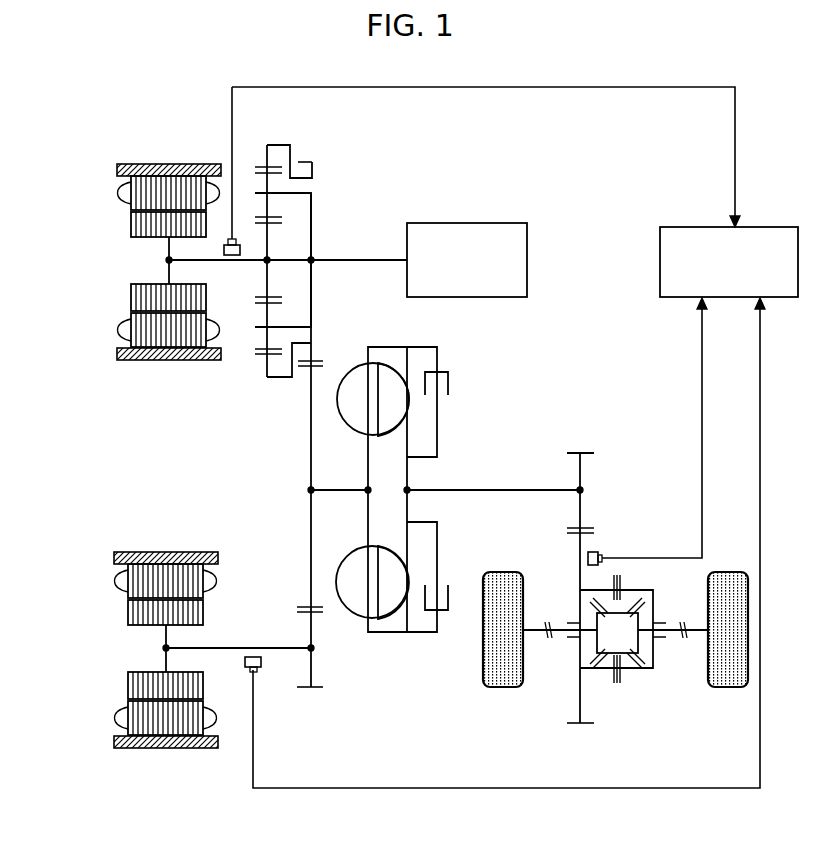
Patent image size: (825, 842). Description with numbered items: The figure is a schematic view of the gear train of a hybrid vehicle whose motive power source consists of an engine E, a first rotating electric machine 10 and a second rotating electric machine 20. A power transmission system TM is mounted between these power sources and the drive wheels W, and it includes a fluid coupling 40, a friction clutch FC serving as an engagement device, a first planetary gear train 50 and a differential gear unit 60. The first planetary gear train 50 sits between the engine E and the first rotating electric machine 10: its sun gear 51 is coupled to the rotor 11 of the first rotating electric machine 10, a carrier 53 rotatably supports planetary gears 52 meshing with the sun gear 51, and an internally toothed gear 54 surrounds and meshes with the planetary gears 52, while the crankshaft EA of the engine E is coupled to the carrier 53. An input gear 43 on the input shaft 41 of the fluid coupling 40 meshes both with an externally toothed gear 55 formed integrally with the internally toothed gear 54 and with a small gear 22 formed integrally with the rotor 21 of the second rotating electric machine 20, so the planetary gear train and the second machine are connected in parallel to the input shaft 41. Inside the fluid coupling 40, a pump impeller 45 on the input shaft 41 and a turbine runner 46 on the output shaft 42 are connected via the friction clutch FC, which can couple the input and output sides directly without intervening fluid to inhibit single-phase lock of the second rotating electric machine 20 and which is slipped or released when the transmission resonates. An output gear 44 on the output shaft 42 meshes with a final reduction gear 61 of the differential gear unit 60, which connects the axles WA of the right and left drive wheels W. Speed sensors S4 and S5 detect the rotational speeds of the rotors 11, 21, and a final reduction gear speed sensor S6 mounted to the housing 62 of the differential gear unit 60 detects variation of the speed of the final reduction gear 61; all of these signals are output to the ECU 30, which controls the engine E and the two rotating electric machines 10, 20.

The first rotating electric machine 10 is at (169, 262).
The rotor 11 is at (133, 220).
The second rotating electric machine 20 is at (175, 650).
The rotor 21 is at (133, 610).
The small gear 22 is at (307, 690).
The ECU 30 is at (761, 227).
The fluid coupling 40 is at (417, 474).
The input shaft 41 is at (324, 490).
The output shaft 42 is at (464, 490).
The input gear 43 is at (299, 607).
The output gear 44 is at (581, 453).
The pump impeller 45 is at (368, 364).
The turbine runner 46 is at (378, 545).
The first planetary gear train 50 is at (268, 273).
The sun gear 51 is at (268, 300).
The planetary gears 52 is at (268, 221).
The carrier 53 is at (311, 260).
The internally toothed gear 54 is at (262, 167).
The externally toothed gear 55 is at (315, 162).
The differential gear unit 60 is at (615, 680).
The final reduction gear 61 is at (580, 724).
The housing 62 is at (641, 668).
The engine E is at (467, 223).
The crankshaft EA is at (366, 260).
The friction clutch FC is at (449, 383).
The power transmission system TM is at (562, 362).
The first rotating electric machine speed sensor S4 is at (231, 257).
The second rotating electric machine speed sensor S5 is at (254, 657).
The final reduction gear speed sensor S6 is at (600, 555).
The drive wheels W is at (505, 688).
The axles WA is at (556, 624).